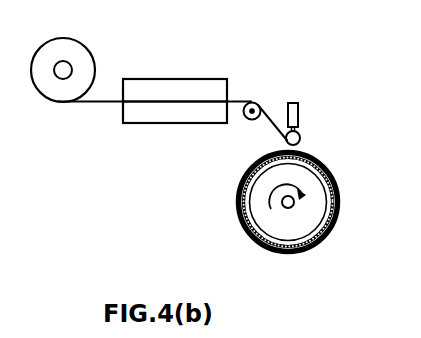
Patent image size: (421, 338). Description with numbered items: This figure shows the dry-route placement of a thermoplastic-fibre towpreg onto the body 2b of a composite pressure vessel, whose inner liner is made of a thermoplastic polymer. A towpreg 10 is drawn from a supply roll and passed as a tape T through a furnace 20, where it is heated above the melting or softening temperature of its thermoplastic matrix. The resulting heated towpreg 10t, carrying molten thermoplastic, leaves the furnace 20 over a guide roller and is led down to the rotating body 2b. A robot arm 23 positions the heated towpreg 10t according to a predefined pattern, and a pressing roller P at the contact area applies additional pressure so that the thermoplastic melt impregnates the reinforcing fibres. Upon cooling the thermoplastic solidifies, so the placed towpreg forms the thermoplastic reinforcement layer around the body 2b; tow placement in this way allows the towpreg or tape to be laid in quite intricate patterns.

The towpreg 10 is at (105, 102).
The tape T is at (175, 76).
The furnace 20 is at (210, 79).
The heated towpreg 10t is at (238, 100).
The robot arm 23 is at (295, 102).
The pressing roller P is at (303, 122).
The body 2b is at (341, 161).